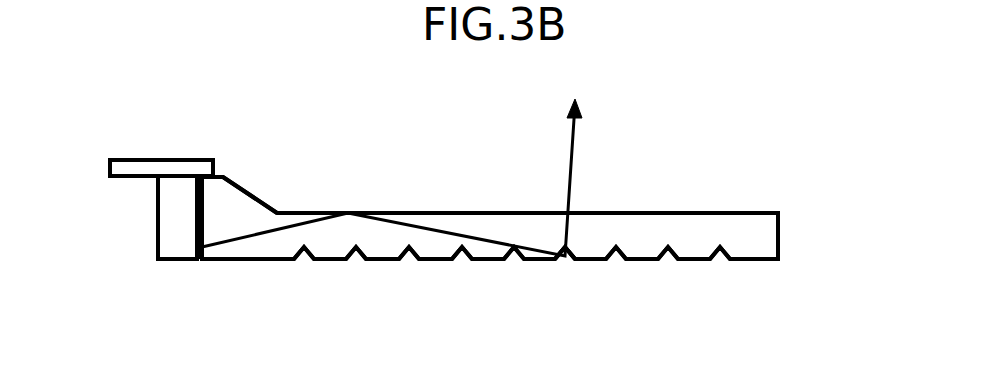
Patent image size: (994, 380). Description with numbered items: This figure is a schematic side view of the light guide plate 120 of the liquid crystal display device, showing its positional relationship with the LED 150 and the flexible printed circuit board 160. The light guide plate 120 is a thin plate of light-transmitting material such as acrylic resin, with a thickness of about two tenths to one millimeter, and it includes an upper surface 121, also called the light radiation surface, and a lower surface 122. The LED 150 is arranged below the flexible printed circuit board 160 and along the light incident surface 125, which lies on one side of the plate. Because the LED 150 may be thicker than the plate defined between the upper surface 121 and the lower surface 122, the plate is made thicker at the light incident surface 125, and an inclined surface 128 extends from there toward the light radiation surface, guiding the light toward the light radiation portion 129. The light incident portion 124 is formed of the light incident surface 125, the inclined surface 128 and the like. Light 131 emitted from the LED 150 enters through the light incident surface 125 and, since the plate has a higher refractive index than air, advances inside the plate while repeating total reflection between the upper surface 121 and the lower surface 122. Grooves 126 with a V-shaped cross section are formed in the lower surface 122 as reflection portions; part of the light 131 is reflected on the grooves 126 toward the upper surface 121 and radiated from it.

The light guide plate 120 is at (430, 242).
The upper surface 121 is at (648, 213).
The lower surface 122 is at (643, 262).
The light incident portion 124 is at (224, 250).
The light incident surface 125 is at (200, 218).
The grooves 126 is at (565, 262).
The inclined surface 128 is at (247, 208).
The light radiation portion 129 is at (703, 235).
The light 131 is at (367, 222).
The LED 150 is at (172, 247).
The flexible printed circuit board 160 is at (166, 163).